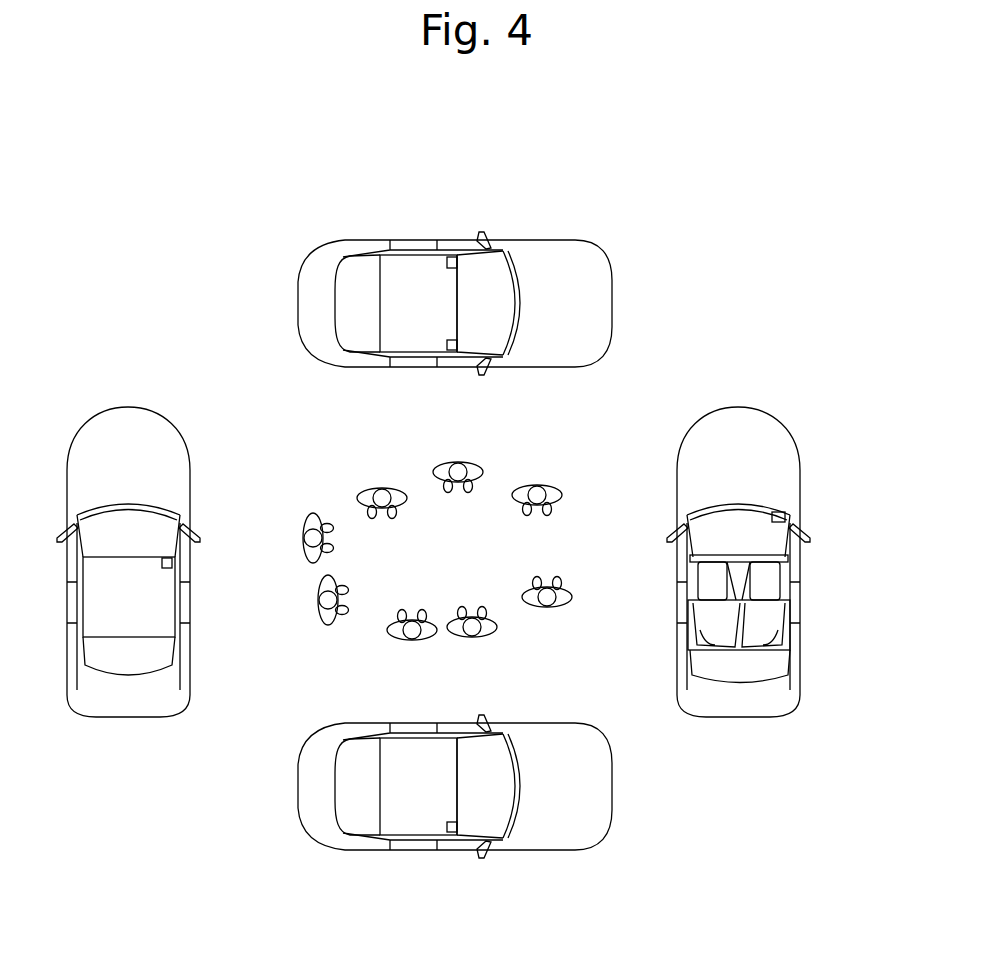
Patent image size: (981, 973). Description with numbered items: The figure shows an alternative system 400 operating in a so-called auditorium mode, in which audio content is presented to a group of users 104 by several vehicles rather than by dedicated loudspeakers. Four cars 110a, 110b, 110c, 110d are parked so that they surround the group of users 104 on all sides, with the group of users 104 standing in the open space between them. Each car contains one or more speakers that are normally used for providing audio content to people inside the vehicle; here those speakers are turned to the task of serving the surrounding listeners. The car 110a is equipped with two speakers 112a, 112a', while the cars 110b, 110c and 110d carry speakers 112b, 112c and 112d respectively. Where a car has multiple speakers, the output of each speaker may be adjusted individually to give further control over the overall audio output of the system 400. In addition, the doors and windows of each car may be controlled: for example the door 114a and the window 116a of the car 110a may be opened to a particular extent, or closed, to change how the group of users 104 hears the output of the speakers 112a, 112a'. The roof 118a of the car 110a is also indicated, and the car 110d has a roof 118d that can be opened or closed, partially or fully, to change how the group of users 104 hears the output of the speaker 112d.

The system 400 is at (710, 169).
The group of users 104 is at (569, 453).
The car 110a is at (281, 292).
The car 110b is at (125, 394).
The car 110c is at (362, 869).
The car 110d is at (745, 393).
The speaker 112a is at (513, 371).
The speaker 112a' is at (461, 222).
The speaker 112b is at (173, 563).
The speaker 112c is at (453, 833).
The speaker 112d is at (782, 513).
The door 114a is at (447, 363).
The window 116a is at (437, 352).
The roof 118a is at (398, 272).
The roof 118d is at (745, 662).